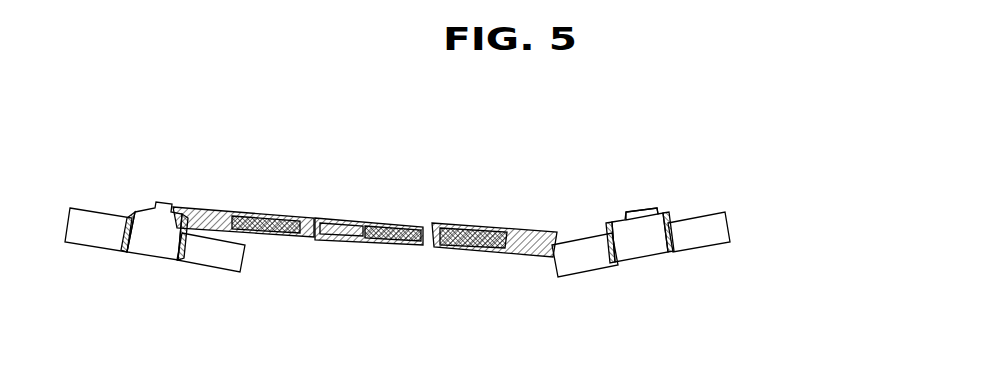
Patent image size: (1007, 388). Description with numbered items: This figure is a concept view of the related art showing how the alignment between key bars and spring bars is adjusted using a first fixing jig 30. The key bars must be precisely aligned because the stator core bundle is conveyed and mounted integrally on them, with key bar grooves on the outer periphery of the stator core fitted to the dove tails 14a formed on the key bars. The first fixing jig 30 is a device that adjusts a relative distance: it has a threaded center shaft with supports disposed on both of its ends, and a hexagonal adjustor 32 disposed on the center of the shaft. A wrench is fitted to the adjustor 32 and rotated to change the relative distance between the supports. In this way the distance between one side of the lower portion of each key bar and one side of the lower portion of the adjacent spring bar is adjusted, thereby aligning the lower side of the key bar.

The dove tail 14a is at (642, 210).
The first fixing jig 30 is at (381, 195).
The hexagonal adjustor 32 is at (378, 246).